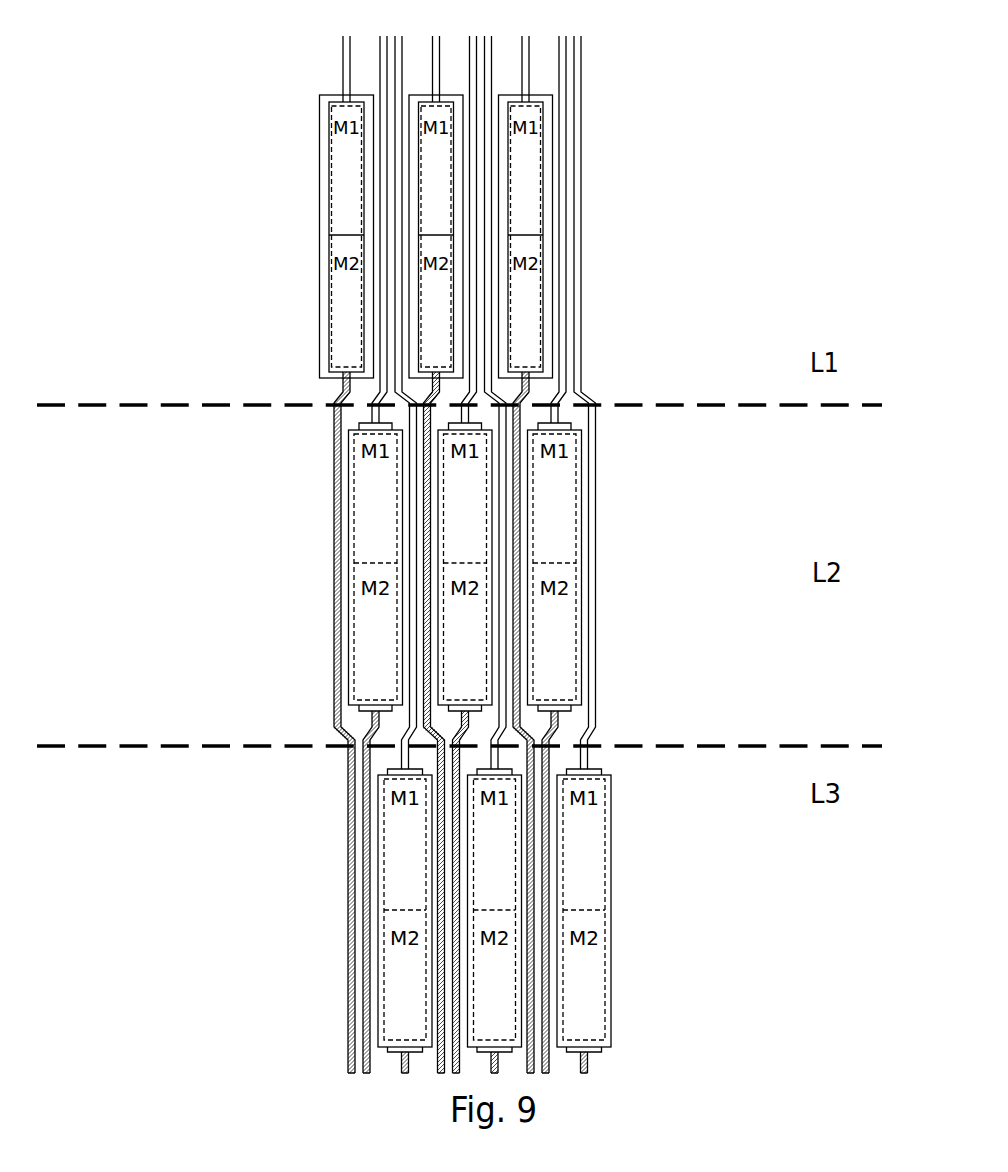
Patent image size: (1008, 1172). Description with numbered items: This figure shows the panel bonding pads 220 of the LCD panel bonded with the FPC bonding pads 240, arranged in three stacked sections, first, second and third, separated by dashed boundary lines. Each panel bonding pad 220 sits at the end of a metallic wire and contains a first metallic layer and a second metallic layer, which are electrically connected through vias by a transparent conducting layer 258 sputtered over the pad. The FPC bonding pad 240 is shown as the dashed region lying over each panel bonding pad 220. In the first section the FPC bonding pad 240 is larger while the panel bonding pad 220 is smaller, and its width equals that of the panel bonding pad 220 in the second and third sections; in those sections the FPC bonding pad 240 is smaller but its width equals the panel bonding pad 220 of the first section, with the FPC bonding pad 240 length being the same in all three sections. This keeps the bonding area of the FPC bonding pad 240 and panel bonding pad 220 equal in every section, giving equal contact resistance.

The panel bonding pad 220 is at (333, 242).
The FPC bonding pad 240 is at (548, 112).
The transparent conducting layer 258 is at (580, 657).